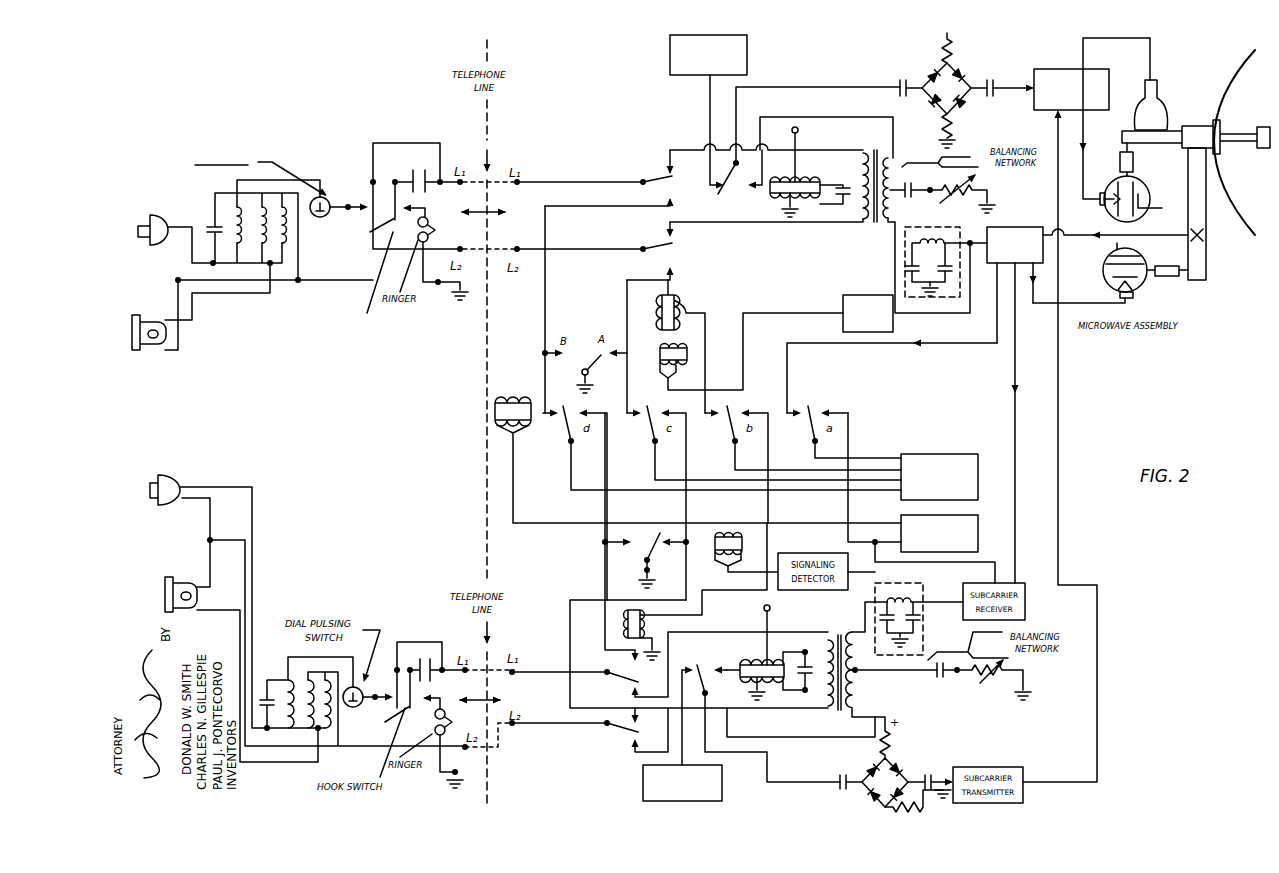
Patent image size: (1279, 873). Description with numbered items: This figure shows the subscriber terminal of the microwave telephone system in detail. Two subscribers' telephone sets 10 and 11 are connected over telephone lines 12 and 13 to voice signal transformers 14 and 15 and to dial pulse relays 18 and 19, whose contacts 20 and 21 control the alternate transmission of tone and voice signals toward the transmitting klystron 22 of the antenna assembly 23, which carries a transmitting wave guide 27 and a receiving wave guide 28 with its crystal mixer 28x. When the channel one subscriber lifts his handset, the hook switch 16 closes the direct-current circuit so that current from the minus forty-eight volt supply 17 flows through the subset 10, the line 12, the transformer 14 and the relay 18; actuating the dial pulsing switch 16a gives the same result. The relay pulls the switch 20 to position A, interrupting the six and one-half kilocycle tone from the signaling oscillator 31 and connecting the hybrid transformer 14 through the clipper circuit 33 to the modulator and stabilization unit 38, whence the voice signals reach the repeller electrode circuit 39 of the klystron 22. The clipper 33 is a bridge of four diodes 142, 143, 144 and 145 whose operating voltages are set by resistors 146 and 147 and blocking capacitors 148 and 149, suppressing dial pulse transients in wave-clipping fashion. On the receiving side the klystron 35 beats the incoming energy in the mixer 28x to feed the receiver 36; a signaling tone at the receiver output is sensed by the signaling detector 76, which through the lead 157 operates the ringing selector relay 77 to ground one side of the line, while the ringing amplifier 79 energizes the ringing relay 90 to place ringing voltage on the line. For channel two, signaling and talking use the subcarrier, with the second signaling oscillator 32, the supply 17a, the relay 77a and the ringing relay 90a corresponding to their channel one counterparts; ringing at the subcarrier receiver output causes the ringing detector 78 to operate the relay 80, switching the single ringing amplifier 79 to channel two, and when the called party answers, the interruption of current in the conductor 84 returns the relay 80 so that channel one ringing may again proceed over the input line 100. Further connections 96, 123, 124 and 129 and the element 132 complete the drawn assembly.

The subscriber's telephone set 10 is at (220, 344).
The subscriber's telephone set 11 is at (188, 537).
The telephone line 12 is at (483, 203).
The telephone line 13 is at (480, 691).
The voice signal transformer 14 is at (872, 226).
The voice signal transformer 15 is at (833, 632).
The hook switch 16 is at (387, 230).
The dial pulsing switch 16a is at (277, 192).
The −48 volt supply 17 is at (799, 131).
The −48 volt supply 17a is at (770, 613).
The dial pulse relay 18 is at (785, 182).
The dial pulse relay 19 is at (758, 665).
The dial pulse switch 20 is at (734, 187).
The contacts 21 is at (761, 715).
The transmitting klystron 22 is at (1146, 186).
The antenna assembly 23 is at (1250, 60).
The transmitting wave guide 27 is at (1163, 130).
The receiving wave guide 28 is at (1206, 265).
The crystal mixer 28x is at (1204, 238).
The signaling oscillator 31 is at (747, 57).
The signaling oscillator 32 is at (722, 787).
The clipper circuit 33 is at (867, 50).
The receiving tube 35 is at (1143, 290).
The subscriber terminal receiver 36 is at (1008, 227).
The modulator and stabilization unit 38 is at (1056, 69).
The repeller electrode circuit 39 is at (1085, 128).
The signaling detector 76 is at (867, 295).
The ringing selector relay 77 is at (661, 358).
The ringing selector relay 77a is at (720, 531).
The ringing detector 78 is at (978, 529).
The ringing amplifier 79 is at (934, 454).
The relay 80 is at (512, 403).
The conductor 84 is at (980, 564).
The ringing relay 90 is at (676, 300).
The ringing relay 90a is at (628, 623).
The lead to ringing detector 96 is at (851, 510).
The channel 1 input line 100 is at (888, 346).
The modulator lead 123 is at (1085, 55).
The modulator input lead 124 is at (1055, 128).
The bridge output lead 129 is at (1012, 85).
The klystron tube 132 is at (1158, 92).
The diode 142 is at (930, 74).
The diode 143 is at (958, 74).
The diode 144 is at (930, 102).
The diode 145 is at (960, 102).
The resistor 146 is at (945, 45).
The resistor 147 is at (942, 130).
The blocking capacitor 148 is at (898, 82).
The blocking capacitor 149 is at (994, 92).
The lead 157 is at (766, 306).